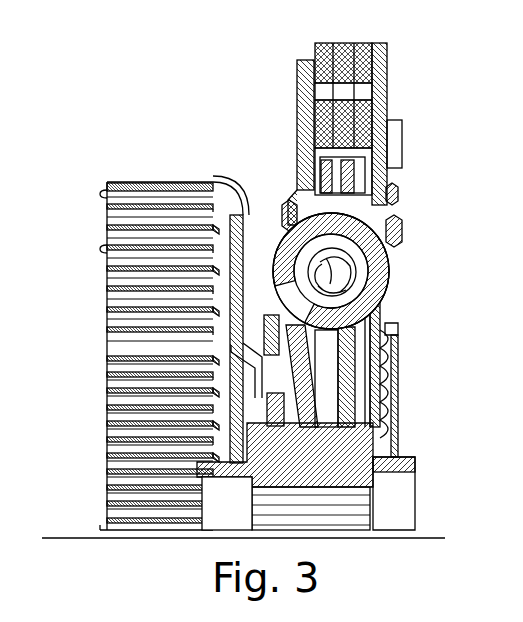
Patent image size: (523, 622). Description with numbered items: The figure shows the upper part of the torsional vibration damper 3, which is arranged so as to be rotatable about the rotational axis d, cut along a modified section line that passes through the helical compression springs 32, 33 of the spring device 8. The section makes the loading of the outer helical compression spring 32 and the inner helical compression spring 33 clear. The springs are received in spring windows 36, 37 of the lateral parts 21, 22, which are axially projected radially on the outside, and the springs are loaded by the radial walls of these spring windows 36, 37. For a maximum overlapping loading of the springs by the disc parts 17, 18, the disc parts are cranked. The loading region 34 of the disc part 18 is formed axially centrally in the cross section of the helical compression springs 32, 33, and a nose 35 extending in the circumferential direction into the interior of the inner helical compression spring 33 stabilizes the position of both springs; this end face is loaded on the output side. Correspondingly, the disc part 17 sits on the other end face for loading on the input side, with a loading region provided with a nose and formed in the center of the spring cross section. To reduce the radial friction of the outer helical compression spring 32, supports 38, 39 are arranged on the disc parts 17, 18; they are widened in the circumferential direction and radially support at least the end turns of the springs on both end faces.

The torsional vibration damper 3 is at (96, 133).
The spring device 8 is at (383, 286).
The disc part 17 is at (398, 418).
The disc part 18 is at (394, 367).
The lateral part 21 is at (297, 120).
The lateral part 22 is at (390, 115).
The outer helical compression spring 32 is at (358, 254).
The inner helical compression spring 33 is at (388, 315).
The loading region 34 is at (402, 235).
The nose 35 is at (387, 290).
The spring window 36 is at (280, 204).
The spring window 37 is at (398, 196).
The support 38 is at (297, 165).
The support 39 is at (388, 185).
The rotational axis d is at (80, 537).